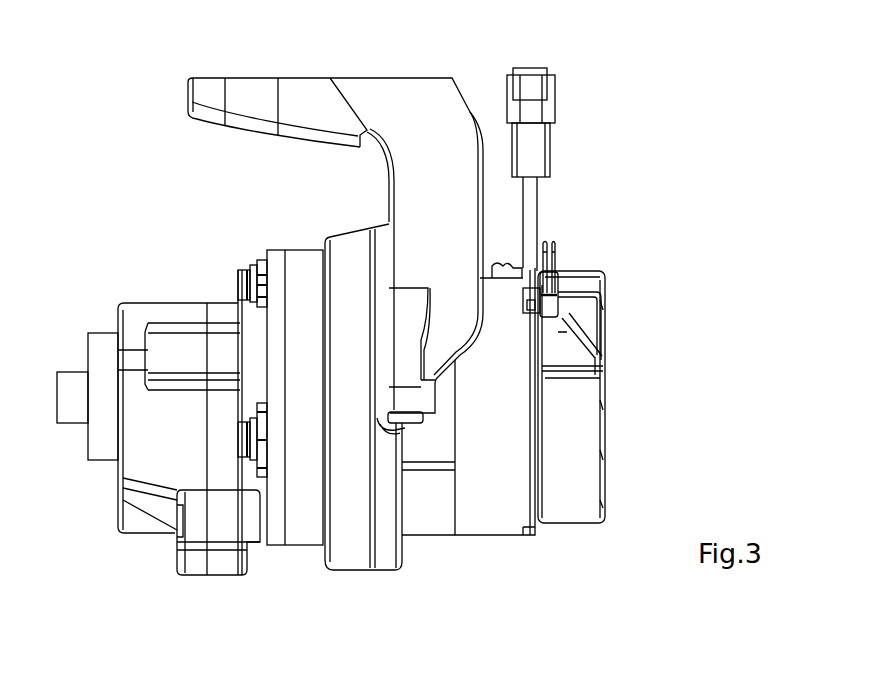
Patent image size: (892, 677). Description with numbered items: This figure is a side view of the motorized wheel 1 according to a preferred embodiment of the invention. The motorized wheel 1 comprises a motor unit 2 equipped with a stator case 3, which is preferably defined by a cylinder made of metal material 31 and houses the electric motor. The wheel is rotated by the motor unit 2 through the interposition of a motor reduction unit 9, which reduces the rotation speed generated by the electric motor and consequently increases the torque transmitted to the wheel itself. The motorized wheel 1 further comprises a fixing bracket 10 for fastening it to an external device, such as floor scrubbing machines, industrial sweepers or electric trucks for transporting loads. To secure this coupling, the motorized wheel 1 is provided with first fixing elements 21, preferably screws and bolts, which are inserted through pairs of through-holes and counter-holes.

The motorized wheel 1 is at (691, 85).
The motor unit 2 is at (648, 252).
The stator case 3 is at (460, 545).
The cylinder made of metal material 31 is at (425, 527).
The motor reduction unit 9 is at (98, 288).
The fixing bracket 10 is at (429, 45).
The first fixing elements 21 is at (243, 287).